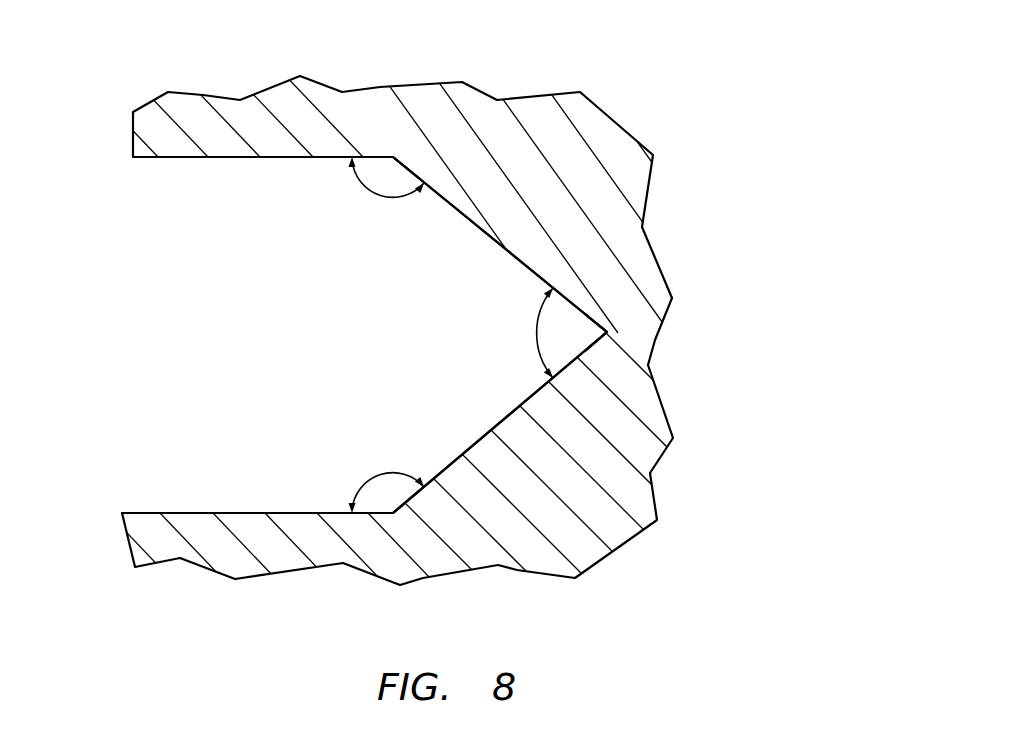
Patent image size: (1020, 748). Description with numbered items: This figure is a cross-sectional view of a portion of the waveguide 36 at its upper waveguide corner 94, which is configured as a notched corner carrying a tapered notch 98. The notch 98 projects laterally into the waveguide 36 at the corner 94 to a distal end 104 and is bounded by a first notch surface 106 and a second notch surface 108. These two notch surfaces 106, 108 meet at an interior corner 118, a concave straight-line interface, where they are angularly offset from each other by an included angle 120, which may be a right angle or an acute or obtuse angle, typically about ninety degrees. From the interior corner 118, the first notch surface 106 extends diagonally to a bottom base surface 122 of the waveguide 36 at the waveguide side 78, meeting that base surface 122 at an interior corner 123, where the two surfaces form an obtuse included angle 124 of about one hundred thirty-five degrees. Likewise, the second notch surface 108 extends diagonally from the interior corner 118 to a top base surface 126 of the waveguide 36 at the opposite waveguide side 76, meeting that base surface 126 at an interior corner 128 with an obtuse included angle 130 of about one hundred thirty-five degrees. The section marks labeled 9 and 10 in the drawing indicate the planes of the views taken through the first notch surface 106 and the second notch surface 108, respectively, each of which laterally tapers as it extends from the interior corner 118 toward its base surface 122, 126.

The waveguide 36 is at (474, 300).
The interior corner 128 is at (394, 157).
The included angle 130 is at (365, 192).
The top side of the waveguide sidewall 76 is at (160, 158).
The base surface 126 is at (170, 210).
The second notch surface 108 is at (453, 208).
The included angle 120 is at (535, 335).
The upper waveguide corner 94 is at (345, 318).
The tapered notch 98 is at (374, 368).
The distal end 104 is at (609, 335).
The interior corner 118 is at (693, 368).
The first notch surface 106 is at (465, 452).
The included angle 124 is at (365, 485).
The bottom side of the waveguide sidewall 78 is at (162, 512).
The base surface 122 is at (162, 512).
The interior corner 123 is at (394, 515).
The section line 10 is at (77, 331).
The section line 9 is at (77, 338).